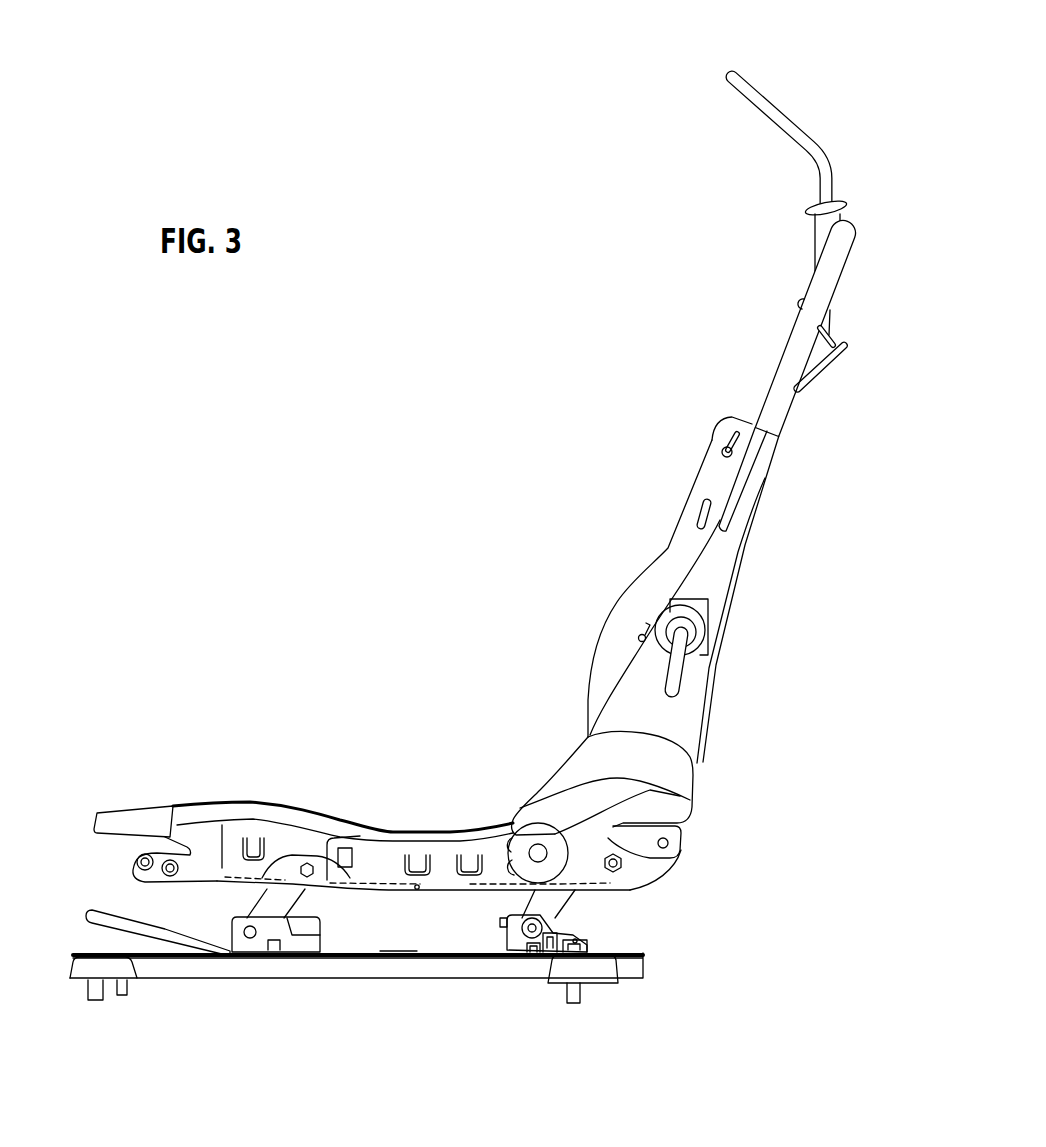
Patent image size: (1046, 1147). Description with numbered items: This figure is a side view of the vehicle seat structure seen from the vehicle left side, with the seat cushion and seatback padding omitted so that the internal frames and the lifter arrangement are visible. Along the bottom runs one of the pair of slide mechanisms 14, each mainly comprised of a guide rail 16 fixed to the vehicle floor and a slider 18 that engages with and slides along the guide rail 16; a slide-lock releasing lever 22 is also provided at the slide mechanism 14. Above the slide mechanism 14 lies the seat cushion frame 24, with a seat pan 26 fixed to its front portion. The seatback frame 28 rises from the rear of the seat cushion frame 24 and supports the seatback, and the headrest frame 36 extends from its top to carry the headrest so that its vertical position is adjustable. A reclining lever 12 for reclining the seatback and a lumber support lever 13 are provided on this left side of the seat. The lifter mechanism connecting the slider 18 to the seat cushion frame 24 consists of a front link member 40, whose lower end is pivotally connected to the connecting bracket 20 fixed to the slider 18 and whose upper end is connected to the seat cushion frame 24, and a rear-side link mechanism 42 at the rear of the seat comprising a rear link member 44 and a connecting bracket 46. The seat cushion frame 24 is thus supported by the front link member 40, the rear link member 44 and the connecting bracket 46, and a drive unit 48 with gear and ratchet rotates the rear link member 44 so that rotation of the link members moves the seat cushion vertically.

The reclining lever 12 is at (693, 771).
The lumber support lever 13 is at (677, 673).
The slide mechanism 14 is at (356, 1022).
The guide rail 16 is at (223, 970).
The slider 18 is at (360, 947).
The connecting bracket 20 is at (298, 945).
The slide-lock releasing lever 22 is at (108, 912).
The seat cushion frame 24 is at (377, 827).
The seat pan 26 is at (190, 806).
The seatback frame 28 is at (782, 395).
The headrest frame 36 is at (786, 120).
The front link member 40 is at (322, 937).
The rear-side link mechanism 42 is at (598, 908).
The rear link member 44 is at (590, 923).
The connecting bracket 46 is at (522, 955).
The drive unit 48 is at (523, 843).